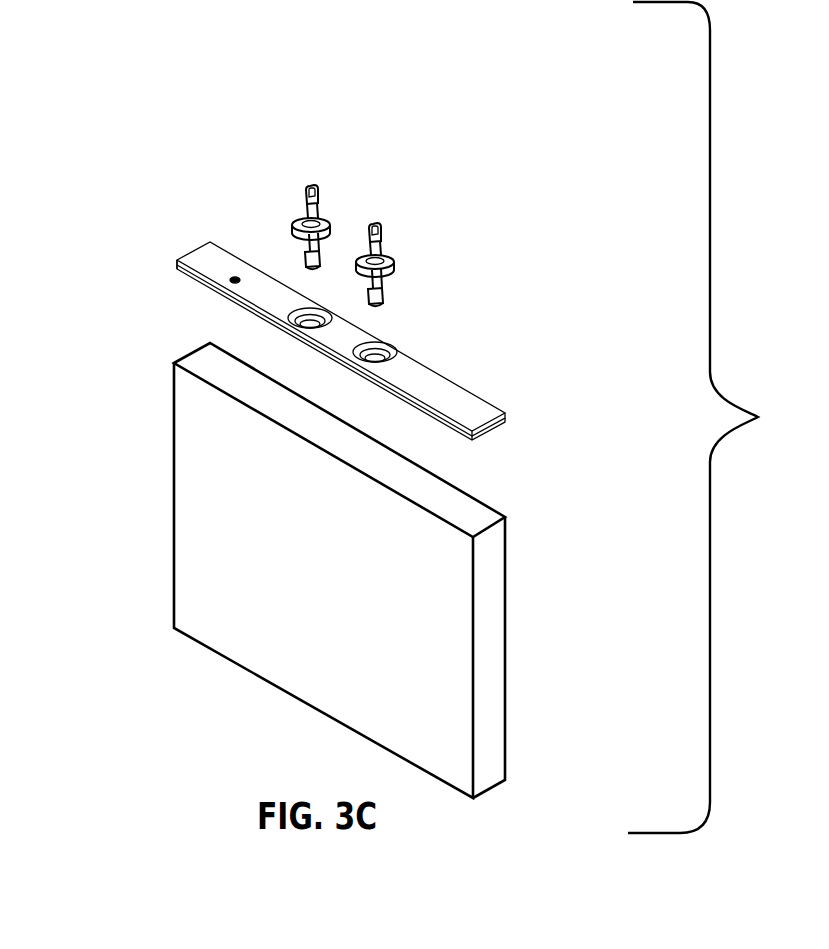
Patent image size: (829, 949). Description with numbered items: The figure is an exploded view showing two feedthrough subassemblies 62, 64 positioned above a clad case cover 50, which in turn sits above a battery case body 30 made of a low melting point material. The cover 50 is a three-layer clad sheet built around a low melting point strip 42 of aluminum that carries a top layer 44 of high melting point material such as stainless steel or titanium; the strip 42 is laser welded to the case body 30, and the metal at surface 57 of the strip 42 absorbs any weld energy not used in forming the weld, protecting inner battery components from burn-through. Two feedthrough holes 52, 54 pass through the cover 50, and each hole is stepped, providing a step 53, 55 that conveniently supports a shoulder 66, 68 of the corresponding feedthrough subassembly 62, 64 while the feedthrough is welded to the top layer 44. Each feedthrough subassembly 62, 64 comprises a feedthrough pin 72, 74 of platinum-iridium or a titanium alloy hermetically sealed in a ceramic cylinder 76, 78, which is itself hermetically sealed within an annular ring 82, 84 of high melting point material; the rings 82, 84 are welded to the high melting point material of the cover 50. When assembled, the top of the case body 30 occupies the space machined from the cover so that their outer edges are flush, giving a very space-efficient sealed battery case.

The battery case body 30 is at (533, 617).
The clad case cover 50 is at (517, 363).
The low melting point strip 42 is at (495, 425).
The top layer 44 is at (472, 408).
The surface 57 is at (177, 267).
The feedthrough hole 52 is at (297, 328).
The step 53 is at (288, 321).
The feedthrough hole 54 is at (372, 367).
The step 55 is at (355, 358).
The feedthrough subassembly 62 is at (370, 173).
The feedthrough subassembly 64 is at (440, 240).
The feedthrough pin 72 is at (309, 185).
The feedthrough pin 74 is at (378, 225).
The cylinder 76 is at (303, 217).
The cylinder 78 is at (386, 254).
The annular ring 82 is at (298, 221).
The annular ring 84 is at (394, 263).
The shoulder 66 is at (293, 231).
The shoulder 68 is at (390, 271).